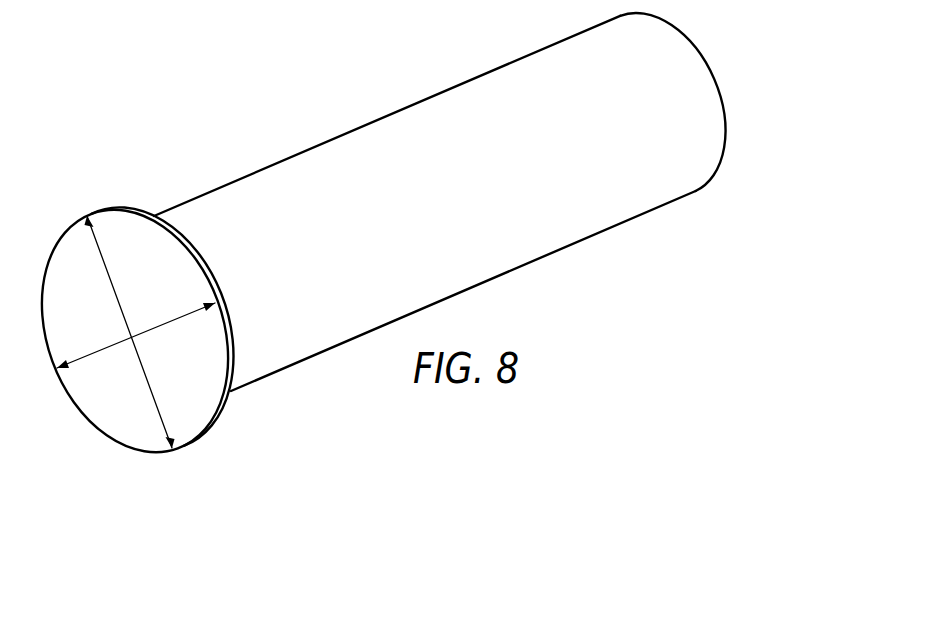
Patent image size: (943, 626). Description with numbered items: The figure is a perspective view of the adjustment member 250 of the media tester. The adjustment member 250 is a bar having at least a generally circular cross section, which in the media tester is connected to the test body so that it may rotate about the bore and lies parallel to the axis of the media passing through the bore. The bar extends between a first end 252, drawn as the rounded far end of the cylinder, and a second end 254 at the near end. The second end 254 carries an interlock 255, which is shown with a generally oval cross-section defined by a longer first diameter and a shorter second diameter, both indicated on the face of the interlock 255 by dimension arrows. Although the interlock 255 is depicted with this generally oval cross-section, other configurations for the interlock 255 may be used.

The adjustment member 250 is at (479, 229).
The first end 252 is at (728, 127).
The second end 254 is at (252, 383).
The interlock 255 is at (213, 427).